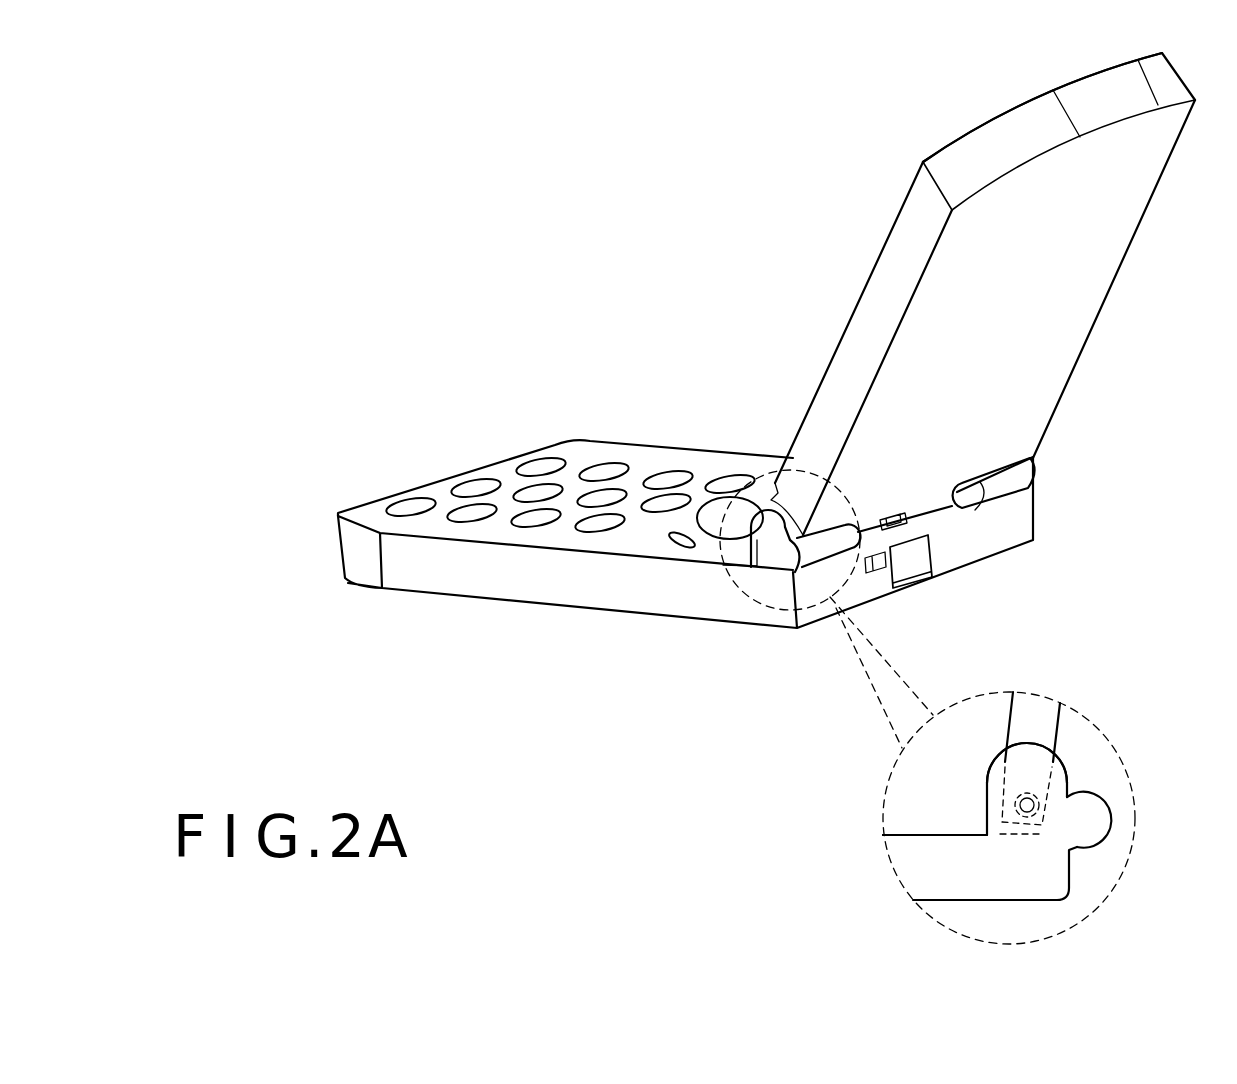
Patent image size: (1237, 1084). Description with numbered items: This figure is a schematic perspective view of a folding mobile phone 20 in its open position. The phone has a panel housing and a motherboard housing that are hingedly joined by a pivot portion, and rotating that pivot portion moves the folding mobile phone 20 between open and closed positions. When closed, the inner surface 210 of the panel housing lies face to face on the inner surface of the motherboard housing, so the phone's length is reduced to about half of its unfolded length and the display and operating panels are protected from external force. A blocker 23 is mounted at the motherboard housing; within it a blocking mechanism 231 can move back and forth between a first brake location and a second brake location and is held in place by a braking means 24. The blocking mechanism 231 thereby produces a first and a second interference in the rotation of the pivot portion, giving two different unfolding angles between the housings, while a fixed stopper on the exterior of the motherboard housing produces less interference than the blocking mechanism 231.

The folding mobile phone 20 is at (712, 293).
The inner surface of the panel housing 210 is at (902, 207).
The blocker 23 is at (918, 562).
The braking means 24 is at (877, 572).
The blocking mechanism 231 is at (905, 515).